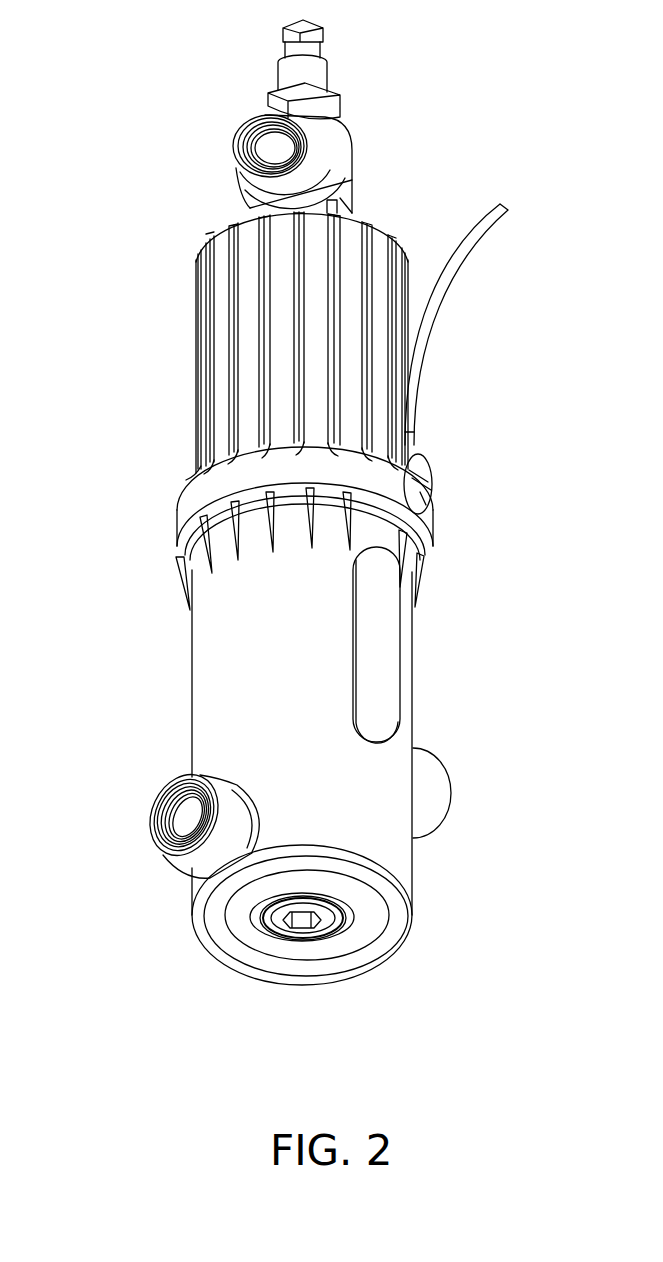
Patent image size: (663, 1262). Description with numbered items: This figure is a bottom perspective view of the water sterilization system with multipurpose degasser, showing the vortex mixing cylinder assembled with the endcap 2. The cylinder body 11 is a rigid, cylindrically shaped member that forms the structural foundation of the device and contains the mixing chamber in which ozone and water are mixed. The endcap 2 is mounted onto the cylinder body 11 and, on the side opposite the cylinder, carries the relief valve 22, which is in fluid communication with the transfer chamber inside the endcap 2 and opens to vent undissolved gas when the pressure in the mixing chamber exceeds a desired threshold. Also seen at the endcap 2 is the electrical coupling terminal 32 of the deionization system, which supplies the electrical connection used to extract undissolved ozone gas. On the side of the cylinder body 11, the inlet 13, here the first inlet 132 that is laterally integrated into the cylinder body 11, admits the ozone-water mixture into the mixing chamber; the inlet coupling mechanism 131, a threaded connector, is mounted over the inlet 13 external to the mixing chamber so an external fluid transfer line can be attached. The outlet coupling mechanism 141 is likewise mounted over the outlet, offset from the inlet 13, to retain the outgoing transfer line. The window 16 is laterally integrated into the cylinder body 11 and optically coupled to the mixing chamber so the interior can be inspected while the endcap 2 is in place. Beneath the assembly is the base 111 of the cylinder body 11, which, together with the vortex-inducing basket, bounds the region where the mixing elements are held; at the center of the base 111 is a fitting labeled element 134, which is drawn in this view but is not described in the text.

The endcap 2 is at (225, 245).
The relief valve 22 is at (347, 162).
The electrical coupling terminal 32 is at (417, 457).
The cylinder body 11 is at (198, 711).
The window 16 is at (383, 640).
The outlet coupling mechanism 141 is at (423, 765).
The inlet 13 is at (153, 846).
The first inlet 132 is at (171, 846).
The inlet coupling mechanism 131 is at (193, 857).
The base 111 is at (387, 925).
The hex bolt 134 is at (313, 930).